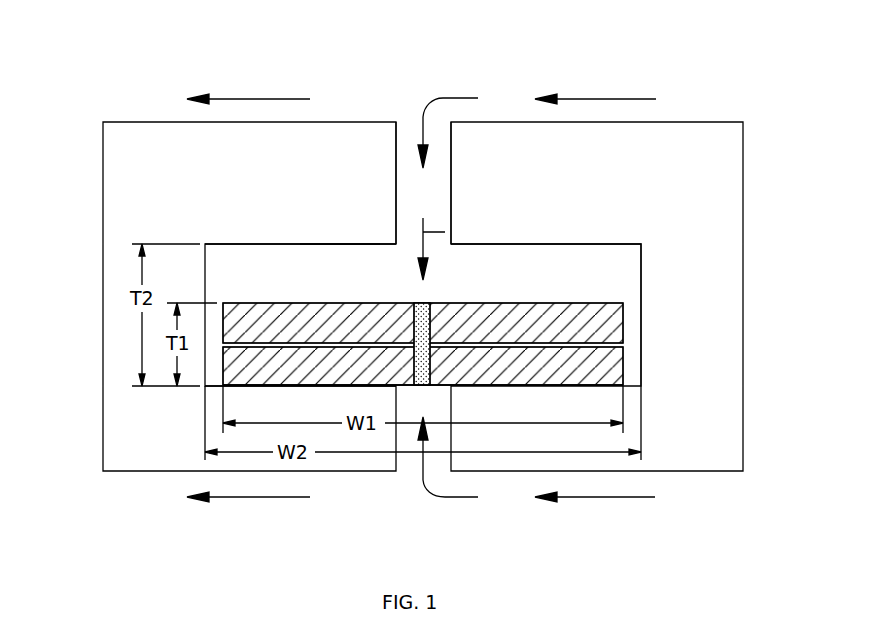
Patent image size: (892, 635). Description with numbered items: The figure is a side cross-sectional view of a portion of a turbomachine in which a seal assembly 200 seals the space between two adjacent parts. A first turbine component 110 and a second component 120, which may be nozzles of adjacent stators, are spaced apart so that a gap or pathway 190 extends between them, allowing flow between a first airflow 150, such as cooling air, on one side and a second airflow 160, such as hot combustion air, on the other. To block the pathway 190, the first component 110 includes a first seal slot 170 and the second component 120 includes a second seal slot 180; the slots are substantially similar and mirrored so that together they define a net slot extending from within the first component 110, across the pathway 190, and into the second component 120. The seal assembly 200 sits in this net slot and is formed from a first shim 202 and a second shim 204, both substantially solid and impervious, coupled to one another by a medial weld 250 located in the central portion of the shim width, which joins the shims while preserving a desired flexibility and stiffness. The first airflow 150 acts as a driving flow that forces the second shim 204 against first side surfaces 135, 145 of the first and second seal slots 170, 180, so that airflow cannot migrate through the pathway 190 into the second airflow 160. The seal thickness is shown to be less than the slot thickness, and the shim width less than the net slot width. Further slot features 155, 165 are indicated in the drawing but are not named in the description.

The first turbine component 110 is at (143, 133).
The second component 120 is at (710, 143).
The first side surface of the first seal slot 135 is at (248, 386).
The first side surface of the second seal slot 145 is at (580, 385).
The first airflow 150 is at (583, 99).
The gap between electrode and substrate 155 is at (345, 244).
The second airflow 160 is at (591, 497).
The recess in second electrode 165 is at (575, 258).
The first seal slot 170 is at (257, 261).
The second seal slot 180 is at (502, 262).
The gap or pathway 190 is at (441, 201).
The seal assembly 200 is at (464, 330).
The first shim 202 is at (513, 312).
The second shim 204 is at (282, 372).
The medial weld 250 is at (422, 303).